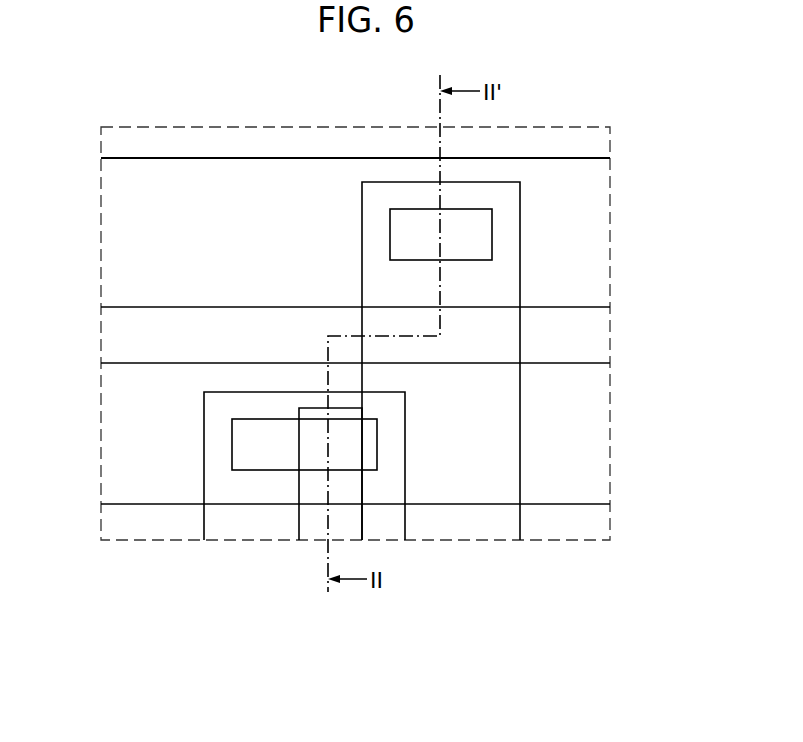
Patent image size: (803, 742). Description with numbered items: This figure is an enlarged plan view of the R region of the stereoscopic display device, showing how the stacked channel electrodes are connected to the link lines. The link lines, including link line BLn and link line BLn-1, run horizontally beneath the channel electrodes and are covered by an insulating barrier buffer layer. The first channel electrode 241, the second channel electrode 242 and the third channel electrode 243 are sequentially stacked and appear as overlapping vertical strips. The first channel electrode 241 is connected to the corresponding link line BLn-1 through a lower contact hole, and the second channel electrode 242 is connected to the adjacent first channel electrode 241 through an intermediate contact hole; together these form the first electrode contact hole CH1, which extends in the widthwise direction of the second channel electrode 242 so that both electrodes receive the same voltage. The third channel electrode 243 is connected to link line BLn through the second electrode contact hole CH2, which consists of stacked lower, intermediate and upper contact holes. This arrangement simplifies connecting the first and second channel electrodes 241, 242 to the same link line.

The R region R is at (184, 125).
The link line BLn is at (596, 208).
The link line BLn-1 is at (594, 440).
The first electrode contact hole CH1 is at (222, 440).
The second electrode contact hole CH2 is at (504, 246).
The first channel electrode 241 is at (385, 527).
The second channel electrode 242 is at (253, 527).
The third channel electrode 243 is at (461, 527).